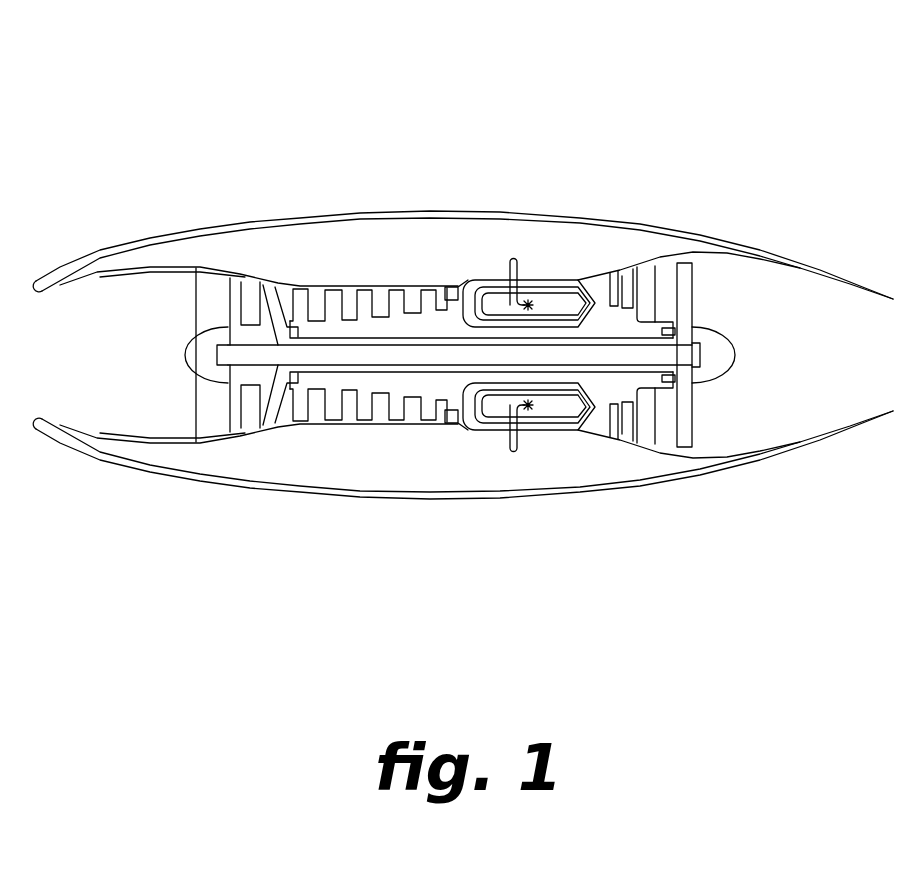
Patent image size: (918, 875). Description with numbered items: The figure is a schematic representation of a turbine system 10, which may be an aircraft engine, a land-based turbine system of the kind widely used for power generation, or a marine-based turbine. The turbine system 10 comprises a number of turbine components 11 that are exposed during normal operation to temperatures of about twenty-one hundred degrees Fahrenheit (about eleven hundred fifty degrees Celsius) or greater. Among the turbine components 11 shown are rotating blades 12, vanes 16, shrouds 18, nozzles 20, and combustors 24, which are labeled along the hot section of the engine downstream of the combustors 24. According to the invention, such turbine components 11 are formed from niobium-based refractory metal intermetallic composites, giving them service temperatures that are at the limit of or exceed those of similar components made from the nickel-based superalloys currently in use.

The turbine system 10 is at (421, 86).
The turbine components 11 is at (640, 27).
The rotating blades 12 is at (617, 278).
The vanes 16 is at (668, 437).
The shrouds 18 is at (635, 268).
The nozzles 20 is at (598, 292).
The combustors 24 is at (548, 305).